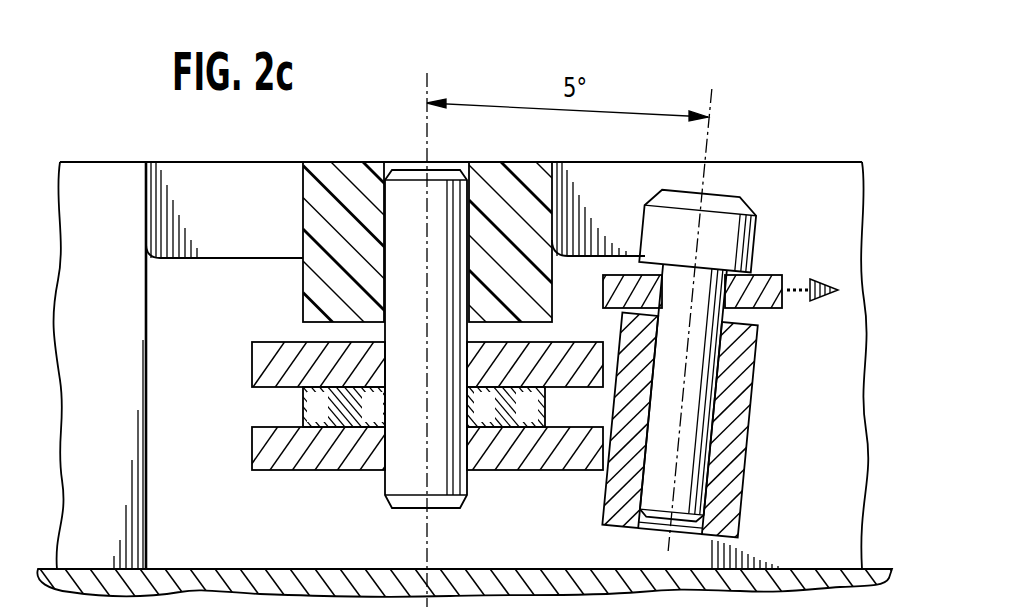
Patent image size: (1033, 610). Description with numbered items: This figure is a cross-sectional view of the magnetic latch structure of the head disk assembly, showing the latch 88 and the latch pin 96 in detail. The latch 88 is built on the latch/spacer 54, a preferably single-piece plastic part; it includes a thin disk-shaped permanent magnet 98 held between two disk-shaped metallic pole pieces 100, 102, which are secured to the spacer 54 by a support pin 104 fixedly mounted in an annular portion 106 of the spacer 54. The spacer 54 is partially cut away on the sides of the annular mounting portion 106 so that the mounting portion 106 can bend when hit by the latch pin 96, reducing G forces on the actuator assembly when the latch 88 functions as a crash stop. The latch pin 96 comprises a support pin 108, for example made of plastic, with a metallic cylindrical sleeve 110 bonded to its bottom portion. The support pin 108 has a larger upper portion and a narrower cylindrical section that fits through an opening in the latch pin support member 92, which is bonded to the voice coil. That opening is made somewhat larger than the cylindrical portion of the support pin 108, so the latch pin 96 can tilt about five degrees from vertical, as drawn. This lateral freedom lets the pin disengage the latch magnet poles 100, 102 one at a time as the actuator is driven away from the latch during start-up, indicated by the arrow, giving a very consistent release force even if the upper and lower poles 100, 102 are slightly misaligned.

The latch/spacer 54 is at (130, 158).
The latch 88 is at (248, 315).
The latch pin assembly 92 is at (770, 307).
The latch pin 96 is at (773, 200).
The permanent magnet 98 is at (303, 418).
The pole piece 100 is at (262, 368).
The pole piece 102 is at (285, 455).
The support pin 104 is at (446, 480).
The annular portion 106 is at (342, 176).
The support pin 108 is at (735, 241).
The metallic cylindrical sleeve 110 is at (735, 467).